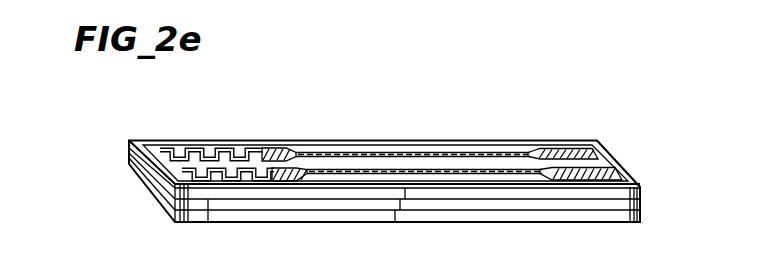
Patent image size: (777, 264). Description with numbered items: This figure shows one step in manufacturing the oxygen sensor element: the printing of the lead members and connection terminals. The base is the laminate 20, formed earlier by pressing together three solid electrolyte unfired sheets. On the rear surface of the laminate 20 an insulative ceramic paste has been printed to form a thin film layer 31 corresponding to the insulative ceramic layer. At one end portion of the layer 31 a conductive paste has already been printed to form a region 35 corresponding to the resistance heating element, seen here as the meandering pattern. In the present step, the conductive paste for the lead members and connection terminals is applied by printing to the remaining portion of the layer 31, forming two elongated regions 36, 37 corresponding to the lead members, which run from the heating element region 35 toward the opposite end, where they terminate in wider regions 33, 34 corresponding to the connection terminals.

The laminate 20 is at (648, 205).
The thin film layer 31 is at (602, 162).
The region corresponding to the connection terminal 33 is at (568, 157).
The region corresponding to the connection terminal 34 is at (615, 175).
The region corresponding to the resistance heating element 35 is at (211, 152).
The region corresponding to the lead member 36 is at (347, 156).
The region corresponding to the lead member 37 is at (418, 171).